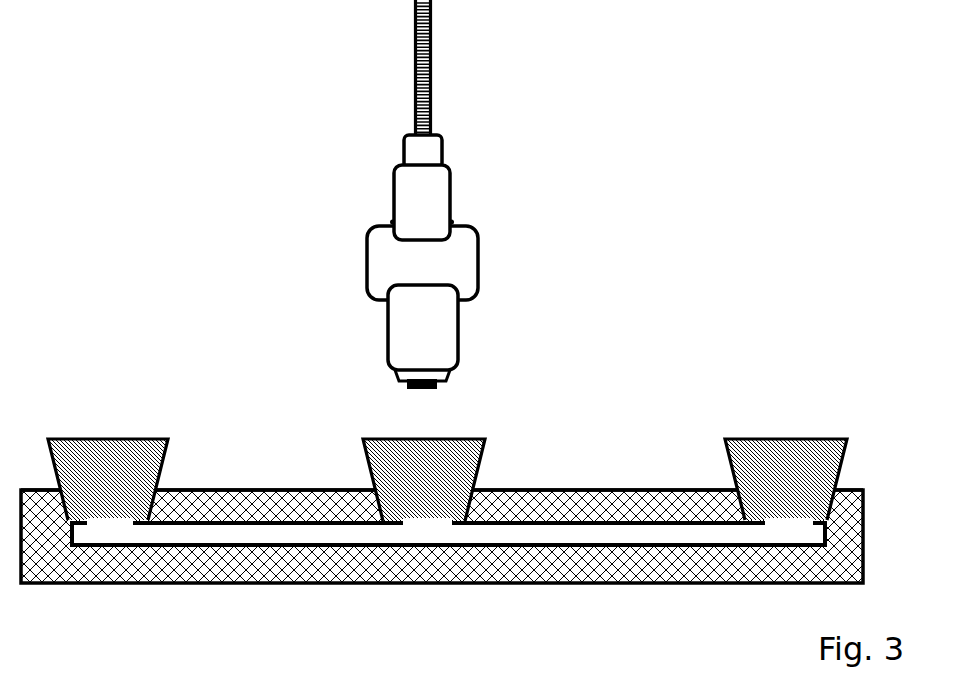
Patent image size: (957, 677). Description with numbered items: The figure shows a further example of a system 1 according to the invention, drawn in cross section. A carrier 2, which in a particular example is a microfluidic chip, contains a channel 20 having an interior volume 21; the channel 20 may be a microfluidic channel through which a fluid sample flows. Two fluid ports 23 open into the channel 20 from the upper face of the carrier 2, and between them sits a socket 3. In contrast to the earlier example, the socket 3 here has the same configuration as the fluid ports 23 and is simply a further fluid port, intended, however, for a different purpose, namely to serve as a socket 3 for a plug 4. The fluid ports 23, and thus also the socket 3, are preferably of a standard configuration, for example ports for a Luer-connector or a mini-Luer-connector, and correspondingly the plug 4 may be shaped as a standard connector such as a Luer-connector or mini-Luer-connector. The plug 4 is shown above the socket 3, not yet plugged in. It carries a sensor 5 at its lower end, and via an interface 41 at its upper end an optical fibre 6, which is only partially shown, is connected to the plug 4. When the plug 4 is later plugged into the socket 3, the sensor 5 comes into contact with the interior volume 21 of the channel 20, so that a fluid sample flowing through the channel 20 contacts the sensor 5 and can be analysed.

The system 1 is at (165, 130).
The carrier 2 is at (252, 486).
The socket 3 is at (485, 455).
The plug 4 is at (478, 263).
The sensor 5 is at (403, 386).
The optical fibre 6 is at (433, 47).
The channel 20 is at (183, 584).
The interior volume 21 is at (272, 533).
The fluid ports 23 is at (117, 438).
The interface 41 is at (402, 151).